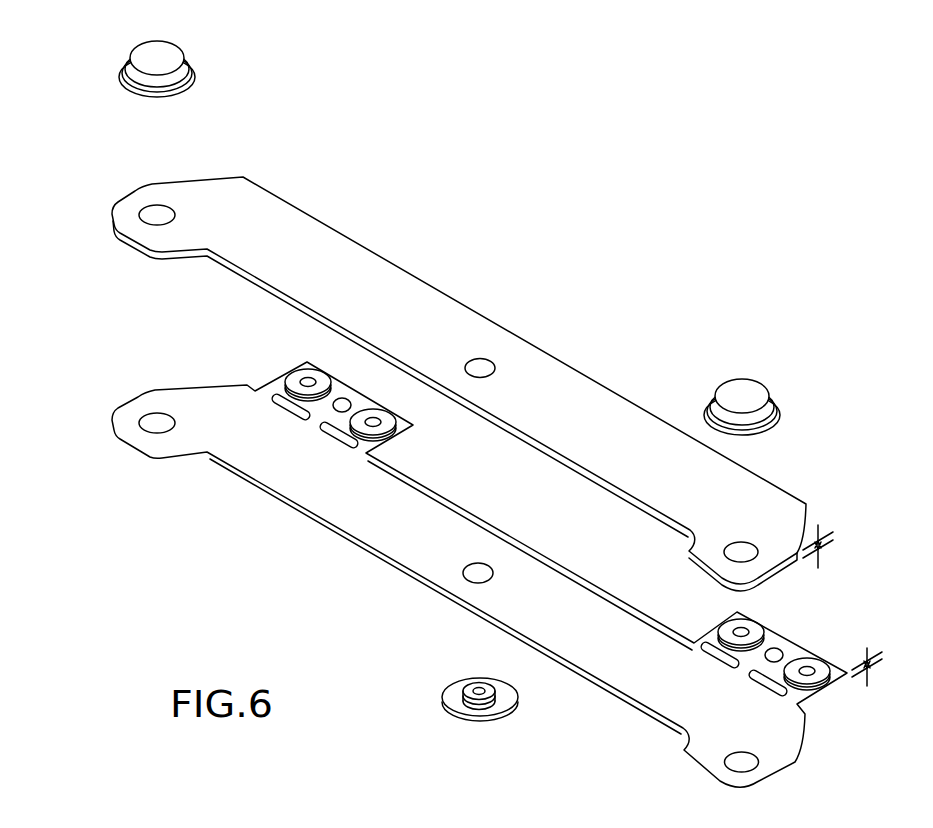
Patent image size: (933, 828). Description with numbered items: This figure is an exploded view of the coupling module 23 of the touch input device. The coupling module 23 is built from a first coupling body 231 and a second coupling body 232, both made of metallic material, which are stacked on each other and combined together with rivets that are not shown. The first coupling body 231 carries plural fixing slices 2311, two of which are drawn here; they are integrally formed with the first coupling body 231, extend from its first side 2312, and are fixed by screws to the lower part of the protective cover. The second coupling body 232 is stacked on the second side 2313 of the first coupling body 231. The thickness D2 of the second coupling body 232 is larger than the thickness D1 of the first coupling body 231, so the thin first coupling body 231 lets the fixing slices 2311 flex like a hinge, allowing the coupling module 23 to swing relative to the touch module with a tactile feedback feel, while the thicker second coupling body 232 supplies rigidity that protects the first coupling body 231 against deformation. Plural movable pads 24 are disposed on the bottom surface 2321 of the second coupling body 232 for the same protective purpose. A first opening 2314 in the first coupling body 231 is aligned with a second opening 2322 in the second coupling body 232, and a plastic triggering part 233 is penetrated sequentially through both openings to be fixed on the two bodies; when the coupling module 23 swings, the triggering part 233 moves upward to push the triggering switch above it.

The coupling module 23 is at (496, 482).
The first coupling body 231 is at (496, 563).
The fixing slices 2311 is at (280, 385).
The first side 2312 is at (460, 502).
The second side 2313 is at (333, 530).
The first opening 2314 is at (472, 582).
The second coupling body 232 is at (459, 384).
The bottom surface 2321 is at (372, 268).
The second opening 2322 is at (481, 366).
The triggering part 233 is at (453, 700).
The movable pads 24 is at (158, 53).
The thickness of the first coupling body D1 is at (879, 667).
The thickness of the second coupling body D2 is at (831, 546).